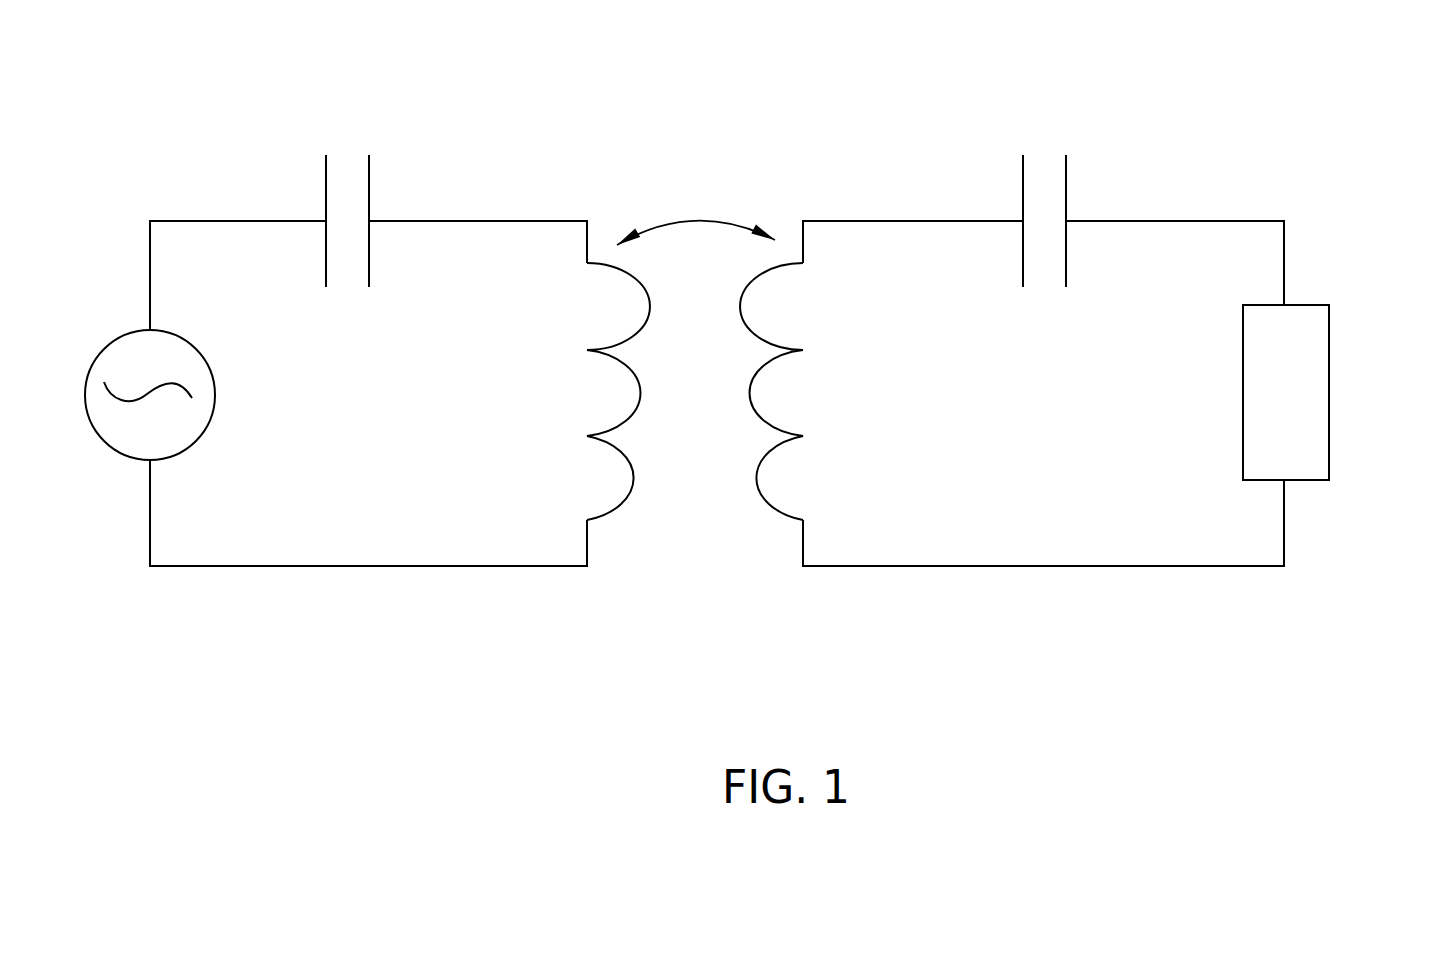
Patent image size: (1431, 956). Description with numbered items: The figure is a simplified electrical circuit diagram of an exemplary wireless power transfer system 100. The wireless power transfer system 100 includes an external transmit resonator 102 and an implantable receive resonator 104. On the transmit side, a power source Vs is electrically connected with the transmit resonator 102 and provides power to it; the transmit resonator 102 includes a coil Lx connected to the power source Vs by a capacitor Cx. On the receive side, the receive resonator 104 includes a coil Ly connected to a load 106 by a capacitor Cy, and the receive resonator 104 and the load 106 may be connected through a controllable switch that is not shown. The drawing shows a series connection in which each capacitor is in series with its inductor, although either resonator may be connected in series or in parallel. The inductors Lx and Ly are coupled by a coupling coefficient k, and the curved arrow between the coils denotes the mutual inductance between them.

The wireless power transfer system 100 is at (117, 138).
The transmit resonator 102 is at (281, 179).
The receive resonator 104 is at (1108, 164).
The load 106 is at (1299, 459).